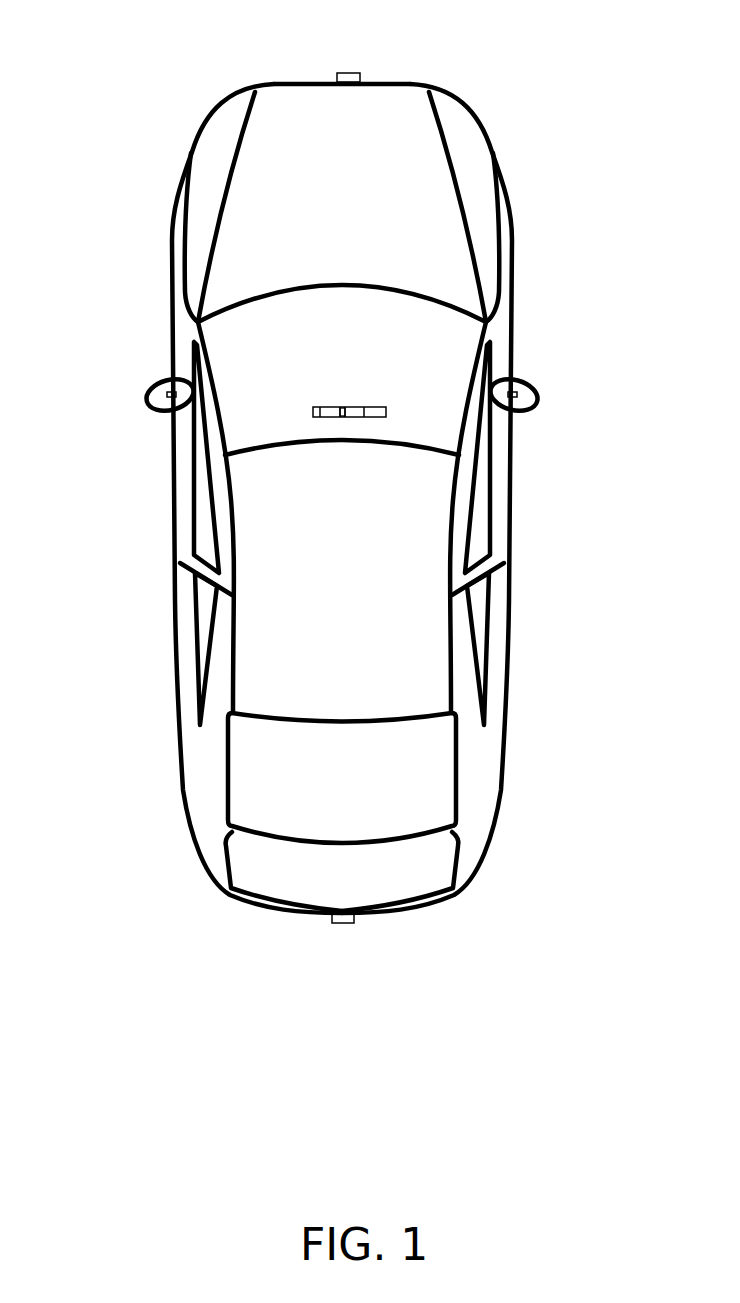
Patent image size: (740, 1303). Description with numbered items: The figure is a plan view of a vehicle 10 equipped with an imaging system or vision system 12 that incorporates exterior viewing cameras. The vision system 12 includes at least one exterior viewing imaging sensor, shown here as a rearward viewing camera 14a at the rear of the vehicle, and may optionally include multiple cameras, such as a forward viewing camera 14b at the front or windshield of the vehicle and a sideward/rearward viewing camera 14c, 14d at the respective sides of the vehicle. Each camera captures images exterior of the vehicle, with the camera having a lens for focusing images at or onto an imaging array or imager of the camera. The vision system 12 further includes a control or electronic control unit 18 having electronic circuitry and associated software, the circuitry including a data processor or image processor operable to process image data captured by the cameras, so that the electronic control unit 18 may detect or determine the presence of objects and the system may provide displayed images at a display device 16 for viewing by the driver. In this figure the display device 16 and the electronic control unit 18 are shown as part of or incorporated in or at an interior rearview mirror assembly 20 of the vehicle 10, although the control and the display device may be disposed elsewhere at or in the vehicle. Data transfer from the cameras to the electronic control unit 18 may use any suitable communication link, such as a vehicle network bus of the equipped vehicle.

The vehicle 10 is at (310, 505).
The vision system 12 is at (304, 930).
The rearward viewing camera 14a is at (350, 923).
The forward viewing camera 14b is at (352, 73).
The sideward/rearward viewing camera 14c is at (156, 387).
The sideward/rearward viewing camera 14d is at (528, 387).
The display device 16 is at (330, 409).
The electronic control unit 18 is at (348, 407).
The interior rearview mirror assembly 20 is at (385, 408).